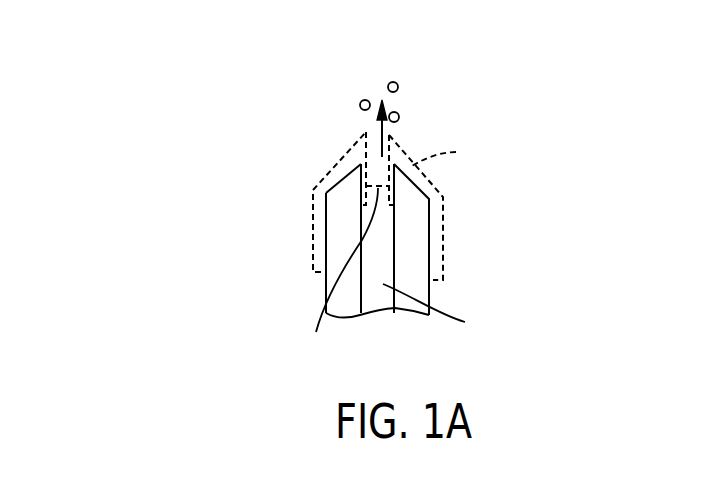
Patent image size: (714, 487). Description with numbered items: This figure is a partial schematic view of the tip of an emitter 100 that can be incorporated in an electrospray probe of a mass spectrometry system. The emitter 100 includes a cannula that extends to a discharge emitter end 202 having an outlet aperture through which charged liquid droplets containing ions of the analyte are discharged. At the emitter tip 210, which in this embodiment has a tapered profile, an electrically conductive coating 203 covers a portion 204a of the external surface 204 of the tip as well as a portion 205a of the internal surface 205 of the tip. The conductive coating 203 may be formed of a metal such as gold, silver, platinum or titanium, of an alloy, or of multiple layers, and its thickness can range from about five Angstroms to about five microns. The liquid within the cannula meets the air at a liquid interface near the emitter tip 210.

The emitter 100 is at (153, 84).
The discharge emitter end 202 is at (333, 160).
The electrically conductive coating 203 is at (308, 242).
The external surface 204 is at (325, 285).
The portion of the external surface 204a is at (323, 218).
The internal surface 205 is at (363, 279).
The portion of the internal surface 205a is at (365, 178).
The emitter tip 210 is at (362, 128).